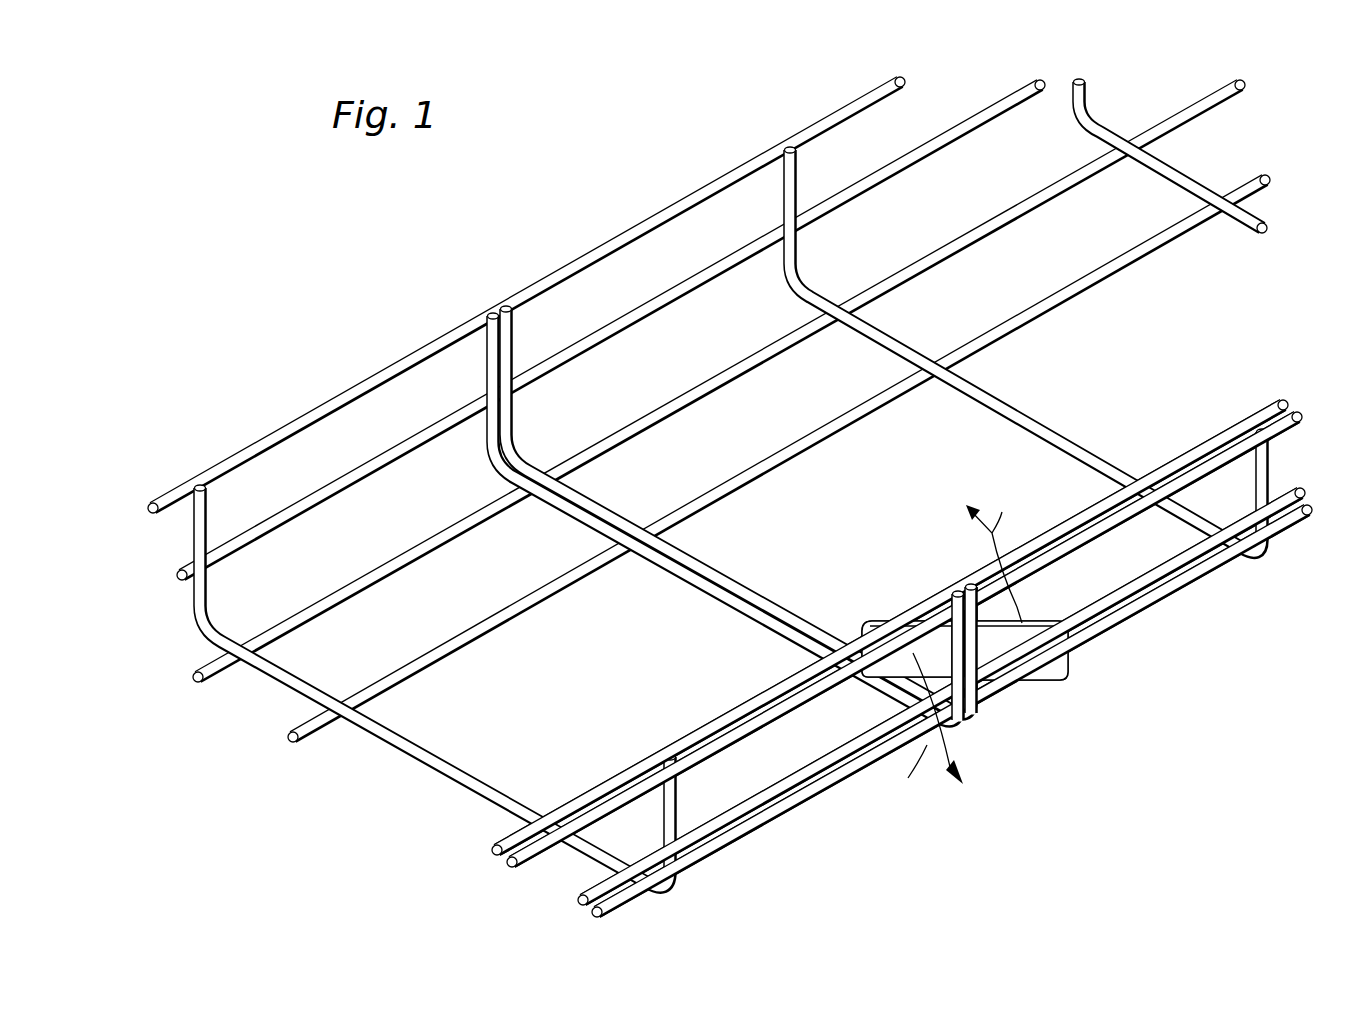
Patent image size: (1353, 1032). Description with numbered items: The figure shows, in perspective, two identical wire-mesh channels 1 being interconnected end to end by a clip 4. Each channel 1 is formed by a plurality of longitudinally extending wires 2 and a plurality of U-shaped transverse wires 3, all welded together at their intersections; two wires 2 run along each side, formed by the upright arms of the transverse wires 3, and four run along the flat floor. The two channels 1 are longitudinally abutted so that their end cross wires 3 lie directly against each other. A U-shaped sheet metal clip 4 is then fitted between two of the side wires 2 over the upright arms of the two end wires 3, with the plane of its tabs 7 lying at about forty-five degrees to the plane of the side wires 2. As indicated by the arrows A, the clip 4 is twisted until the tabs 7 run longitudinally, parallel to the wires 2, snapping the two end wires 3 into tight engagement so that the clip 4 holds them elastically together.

The wire channel 1 is at (307, 288).
The longitudinally extending wires 2 is at (275, 437).
The U-shaped transverse wires 3 is at (1165, 167).
The clip 4 is at (1006, 712).
The tab 7 is at (885, 668).